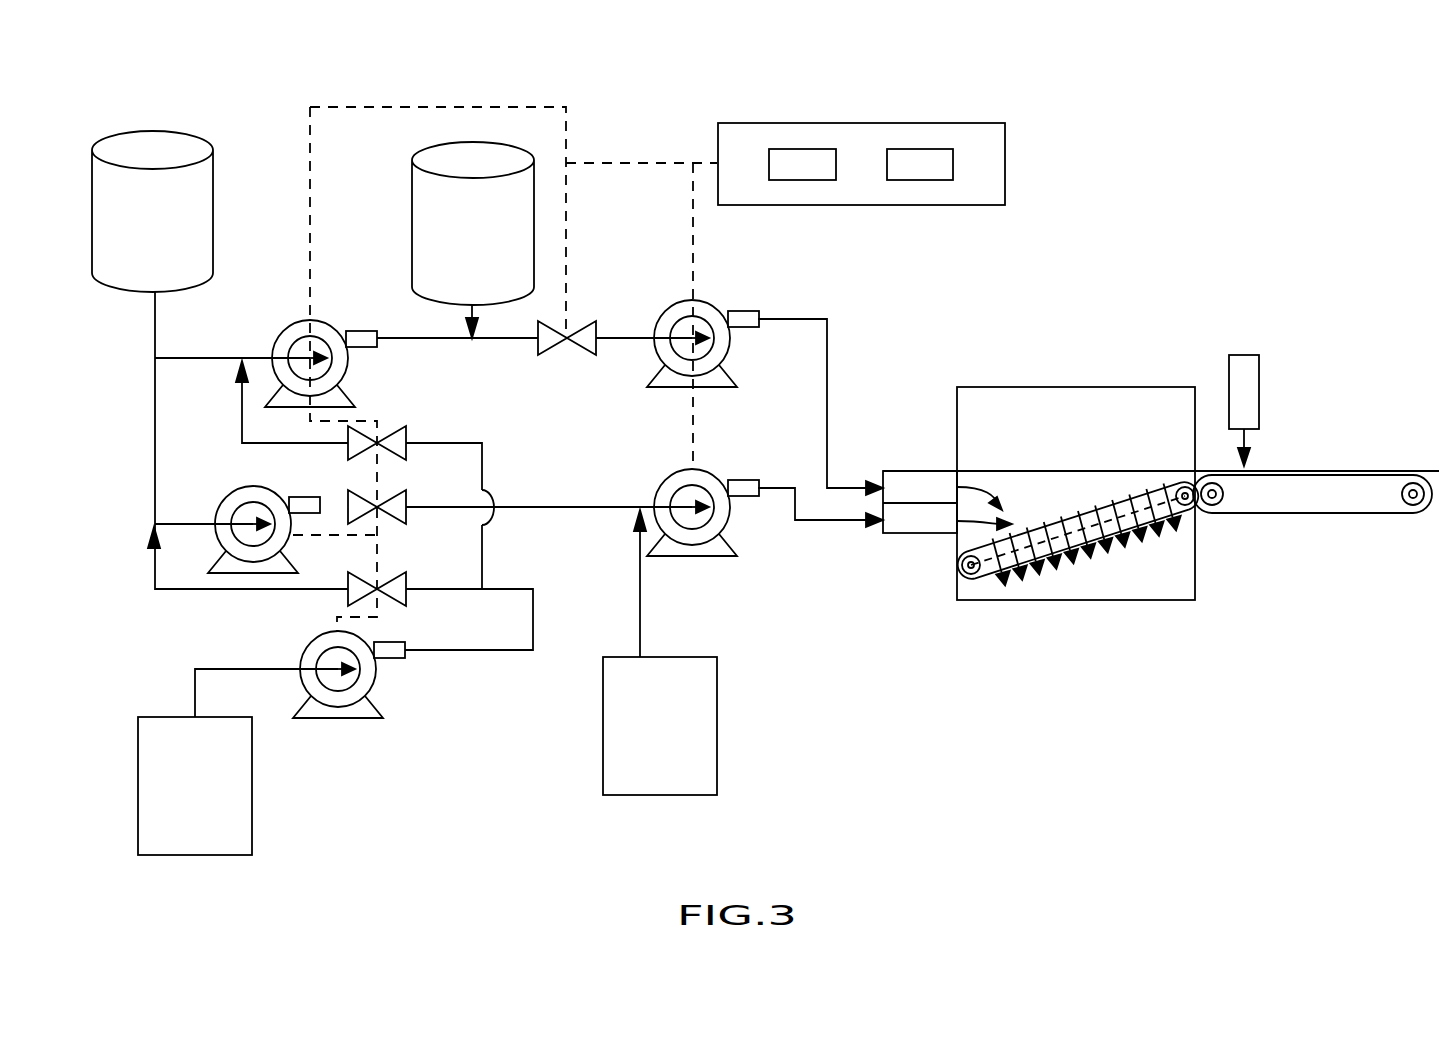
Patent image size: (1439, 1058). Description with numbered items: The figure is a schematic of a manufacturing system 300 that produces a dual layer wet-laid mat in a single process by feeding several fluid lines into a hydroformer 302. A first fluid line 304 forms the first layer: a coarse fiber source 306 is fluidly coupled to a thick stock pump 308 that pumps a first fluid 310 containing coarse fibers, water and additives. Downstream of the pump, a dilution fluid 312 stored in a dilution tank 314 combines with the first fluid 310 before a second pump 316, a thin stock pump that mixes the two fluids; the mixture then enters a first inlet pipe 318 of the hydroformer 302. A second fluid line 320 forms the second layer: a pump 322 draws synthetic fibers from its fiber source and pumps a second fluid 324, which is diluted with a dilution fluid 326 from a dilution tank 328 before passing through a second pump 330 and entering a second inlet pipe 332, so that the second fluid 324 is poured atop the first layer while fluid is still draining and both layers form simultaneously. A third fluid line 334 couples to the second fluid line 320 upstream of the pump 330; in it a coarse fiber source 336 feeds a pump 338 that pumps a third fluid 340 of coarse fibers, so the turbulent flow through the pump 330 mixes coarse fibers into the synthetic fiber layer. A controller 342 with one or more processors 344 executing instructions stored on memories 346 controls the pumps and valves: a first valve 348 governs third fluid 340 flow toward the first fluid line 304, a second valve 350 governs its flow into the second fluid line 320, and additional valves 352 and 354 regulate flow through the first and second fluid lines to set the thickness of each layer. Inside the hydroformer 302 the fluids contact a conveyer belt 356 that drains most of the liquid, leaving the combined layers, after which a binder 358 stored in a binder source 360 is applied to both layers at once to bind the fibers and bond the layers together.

The manufacturing system 300 is at (1122, 196).
The hydroformer 302 is at (1102, 638).
The first fluid line 304 is at (428, 800).
The coarse fiber source 306 is at (192, 144).
The pump 308 is at (228, 496).
The first fluid 310 is at (566, 510).
The dilution fluid 312 is at (640, 605).
The dilution tank 314 is at (717, 760).
The second pump 316 is at (725, 555).
The first inlet pipe 318 is at (903, 533).
The second fluid line 320 is at (598, 104).
The pump 322 is at (348, 370).
The second fluid 324 is at (392, 338).
The dilution fluid 326 is at (470, 313).
The dilution tank 328 is at (412, 230).
The second pump 330 is at (716, 308).
The second inlet pipe 332 is at (905, 471).
The third fluid line 334 is at (504, 478).
The coarse fiber source 336 is at (190, 855).
The pump 338 is at (338, 717).
The third fluid 340 is at (465, 650).
The controller 342 is at (850, 123).
The processor 344 is at (810, 172).
The memory 346 is at (922, 172).
The first valve 348 is at (408, 578).
The second valve 350 is at (406, 428).
The valve 352 is at (408, 496).
The valve 354 is at (583, 321).
The conveyer belt 356 is at (975, 580).
The binder 358 is at (1246, 436).
The binder source 360 is at (1259, 383).